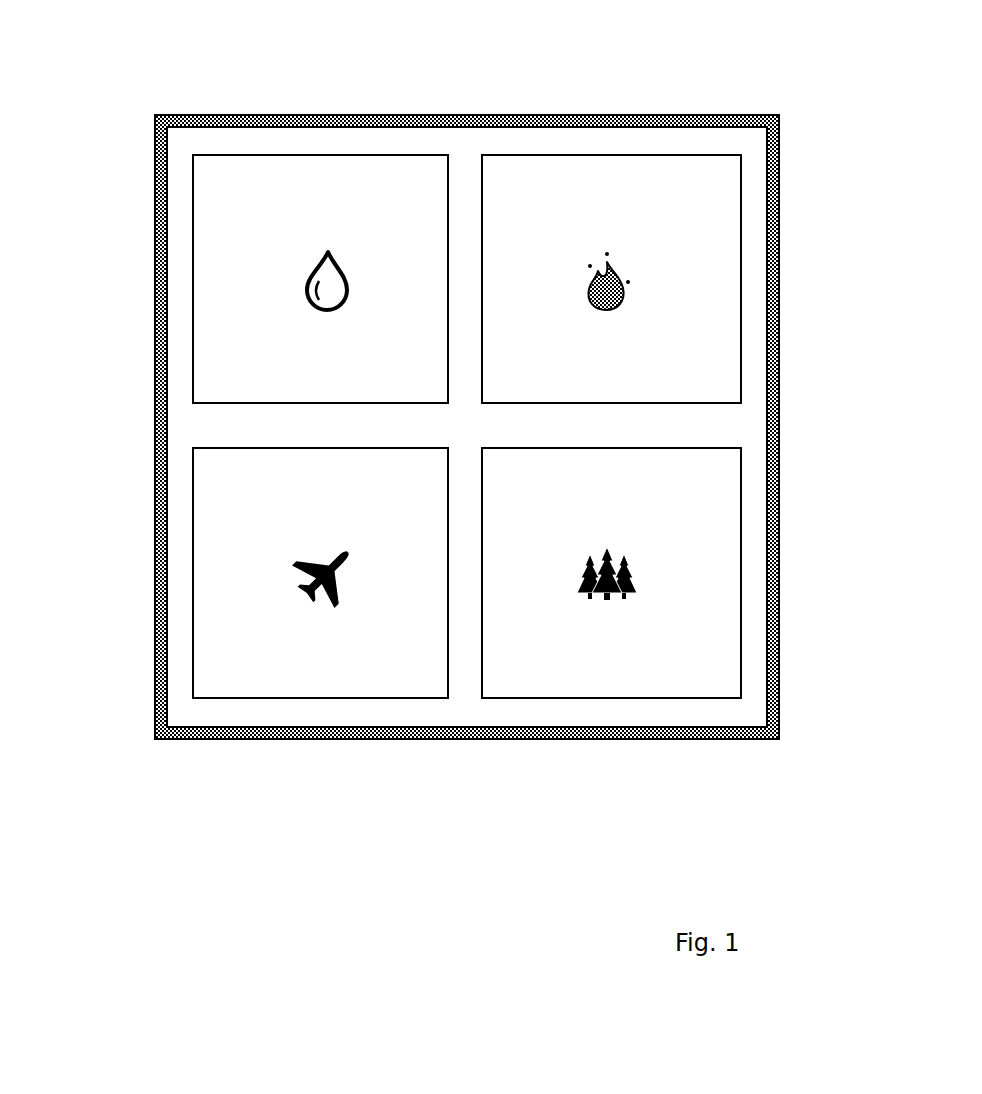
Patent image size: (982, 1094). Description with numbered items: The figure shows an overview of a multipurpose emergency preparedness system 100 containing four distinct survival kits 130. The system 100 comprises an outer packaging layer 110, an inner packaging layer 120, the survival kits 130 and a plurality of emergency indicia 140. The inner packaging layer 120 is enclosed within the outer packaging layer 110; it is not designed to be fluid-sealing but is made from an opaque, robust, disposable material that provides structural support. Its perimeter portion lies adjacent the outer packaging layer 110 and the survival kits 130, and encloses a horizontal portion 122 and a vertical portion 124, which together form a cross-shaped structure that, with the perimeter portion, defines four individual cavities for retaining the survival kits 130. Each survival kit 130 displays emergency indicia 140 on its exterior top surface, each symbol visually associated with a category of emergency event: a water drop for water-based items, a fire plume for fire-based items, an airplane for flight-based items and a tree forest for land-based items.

The multipurpose emergency preparedness system 100 is at (467, 484).
The outer packaging layer 110 is at (163, 595).
The inner packaging layer 120 is at (753, 262).
The horizontal portion 122 is at (679, 427).
The vertical portion 124 is at (466, 649).
The survival kit 130 is at (218, 268).
The emergency indicia 140 is at (339, 262).